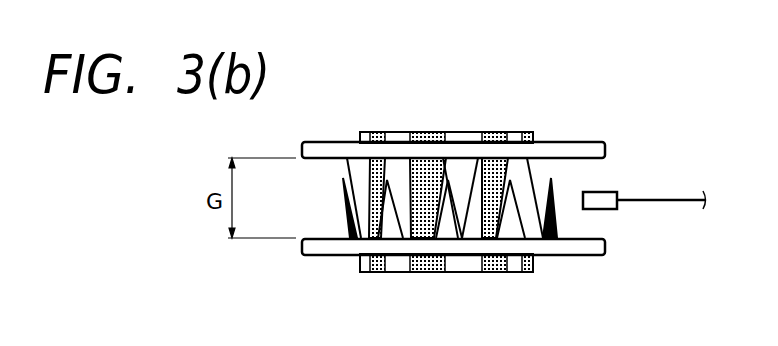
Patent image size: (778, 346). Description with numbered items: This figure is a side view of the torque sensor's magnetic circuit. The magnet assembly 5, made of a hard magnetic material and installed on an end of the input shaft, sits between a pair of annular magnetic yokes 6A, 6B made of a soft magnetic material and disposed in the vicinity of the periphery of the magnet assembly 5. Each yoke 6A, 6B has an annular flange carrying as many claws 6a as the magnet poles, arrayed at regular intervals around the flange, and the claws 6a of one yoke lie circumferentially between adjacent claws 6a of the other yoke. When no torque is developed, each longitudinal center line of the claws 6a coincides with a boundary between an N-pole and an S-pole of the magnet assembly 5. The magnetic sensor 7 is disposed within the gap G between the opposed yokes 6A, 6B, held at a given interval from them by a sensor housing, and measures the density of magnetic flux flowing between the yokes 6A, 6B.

The magnet assembly 5 is at (521, 151).
The magnetic yoke 6A is at (580, 148).
The magnetic yoke 6B is at (580, 247).
The claws 6a is at (550, 225).
The magnetic sensor 7 is at (594, 199).